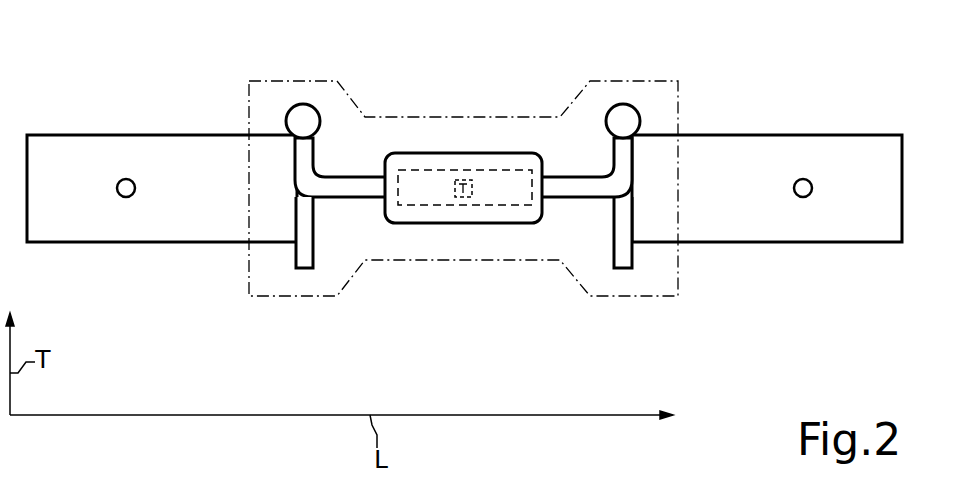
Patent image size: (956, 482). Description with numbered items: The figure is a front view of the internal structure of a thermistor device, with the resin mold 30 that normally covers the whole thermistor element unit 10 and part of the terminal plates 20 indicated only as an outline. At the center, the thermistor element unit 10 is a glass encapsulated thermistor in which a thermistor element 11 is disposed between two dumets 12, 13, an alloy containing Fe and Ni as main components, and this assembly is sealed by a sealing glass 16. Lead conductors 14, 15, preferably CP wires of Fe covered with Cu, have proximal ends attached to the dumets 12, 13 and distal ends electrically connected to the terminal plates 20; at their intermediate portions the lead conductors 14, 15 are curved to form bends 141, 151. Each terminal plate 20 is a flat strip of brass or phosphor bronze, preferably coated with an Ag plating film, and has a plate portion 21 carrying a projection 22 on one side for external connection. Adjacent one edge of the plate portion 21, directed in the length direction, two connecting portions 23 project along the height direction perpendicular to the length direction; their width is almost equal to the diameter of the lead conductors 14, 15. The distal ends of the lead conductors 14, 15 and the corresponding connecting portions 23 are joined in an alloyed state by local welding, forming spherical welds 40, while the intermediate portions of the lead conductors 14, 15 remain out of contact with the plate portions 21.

The thermistor element unit 10 is at (510, 223).
The thermistor element 11 is at (465, 175).
The dumet 12 is at (416, 172).
The dumet 13 is at (512, 172).
The lead conductor 14 is at (296, 148).
The bend 141 is at (300, 184).
The lead conductor 15 is at (632, 148).
The bend 151 is at (621, 184).
The sealing glass 16 is at (463, 198).
The terminal plate 20 is at (157, 242).
The plate portion 21 is at (160, 151).
The projection 22 is at (124, 178).
The connecting portion 23 is at (302, 268).
The resin mold 30 is at (389, 262).
The spherical weld 40 is at (303, 104).